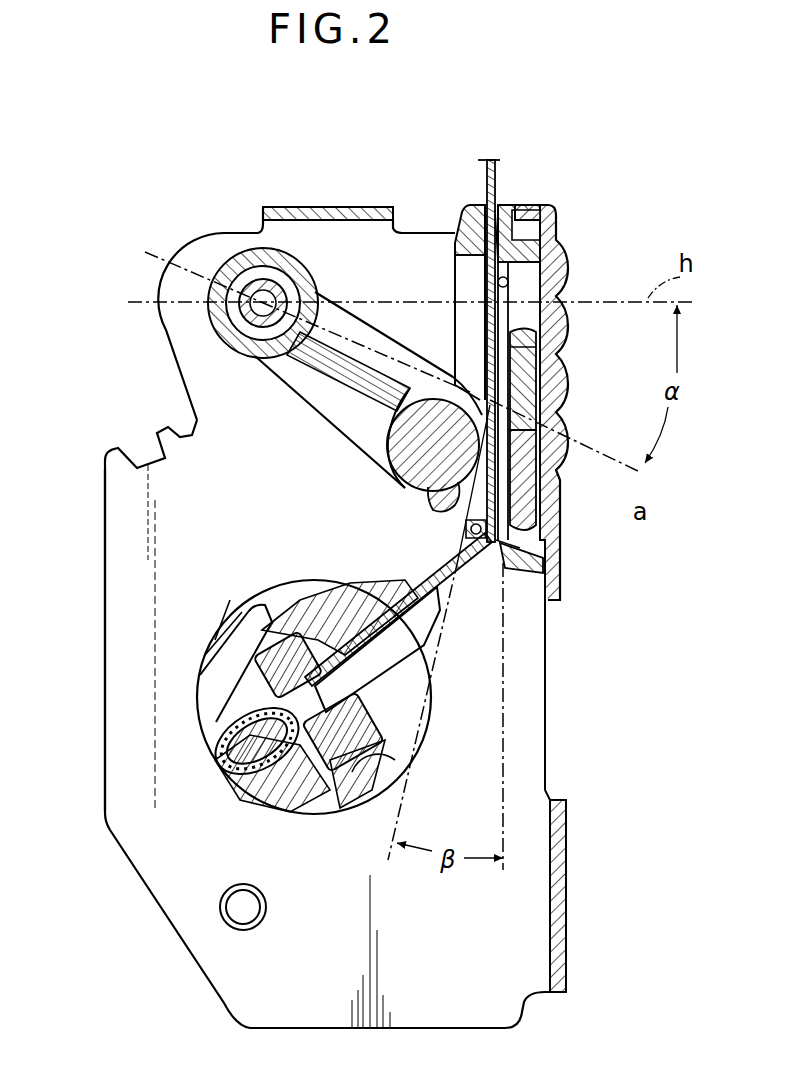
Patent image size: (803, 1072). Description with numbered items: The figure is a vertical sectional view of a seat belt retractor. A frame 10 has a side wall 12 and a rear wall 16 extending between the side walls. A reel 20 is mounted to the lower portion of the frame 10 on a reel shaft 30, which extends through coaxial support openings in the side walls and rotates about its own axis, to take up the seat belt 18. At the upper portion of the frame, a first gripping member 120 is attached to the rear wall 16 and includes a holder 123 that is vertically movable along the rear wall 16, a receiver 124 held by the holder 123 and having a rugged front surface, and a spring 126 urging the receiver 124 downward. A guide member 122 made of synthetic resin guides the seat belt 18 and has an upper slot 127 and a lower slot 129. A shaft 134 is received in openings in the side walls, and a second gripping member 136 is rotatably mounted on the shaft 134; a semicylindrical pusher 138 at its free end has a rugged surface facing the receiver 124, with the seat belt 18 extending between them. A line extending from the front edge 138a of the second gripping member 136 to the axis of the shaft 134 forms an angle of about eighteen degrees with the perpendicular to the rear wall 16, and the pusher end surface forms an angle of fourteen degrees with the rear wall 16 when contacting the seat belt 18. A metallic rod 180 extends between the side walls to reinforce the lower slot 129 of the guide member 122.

The frame 10 is at (158, 913).
The side wall 12 is at (132, 573).
The rear wall 16 is at (562, 495).
The seat belt 18 is at (497, 163).
The reel 20 is at (276, 814).
The reel shaft 30 is at (348, 814).
The first gripping member 120 is at (540, 292).
The guide member 122 is at (455, 288).
The holder 123 is at (560, 355).
The receiver 124 is at (560, 392).
The spring 126 is at (507, 287).
The upper slot 127 is at (500, 200).
The lower slot 129 is at (497, 546).
The shaft 134 is at (210, 330).
The second gripping member 136 is at (318, 390).
The pusher 138 is at (430, 500).
The front edge 138a is at (375, 460).
The metallic rod 180 is at (468, 532).